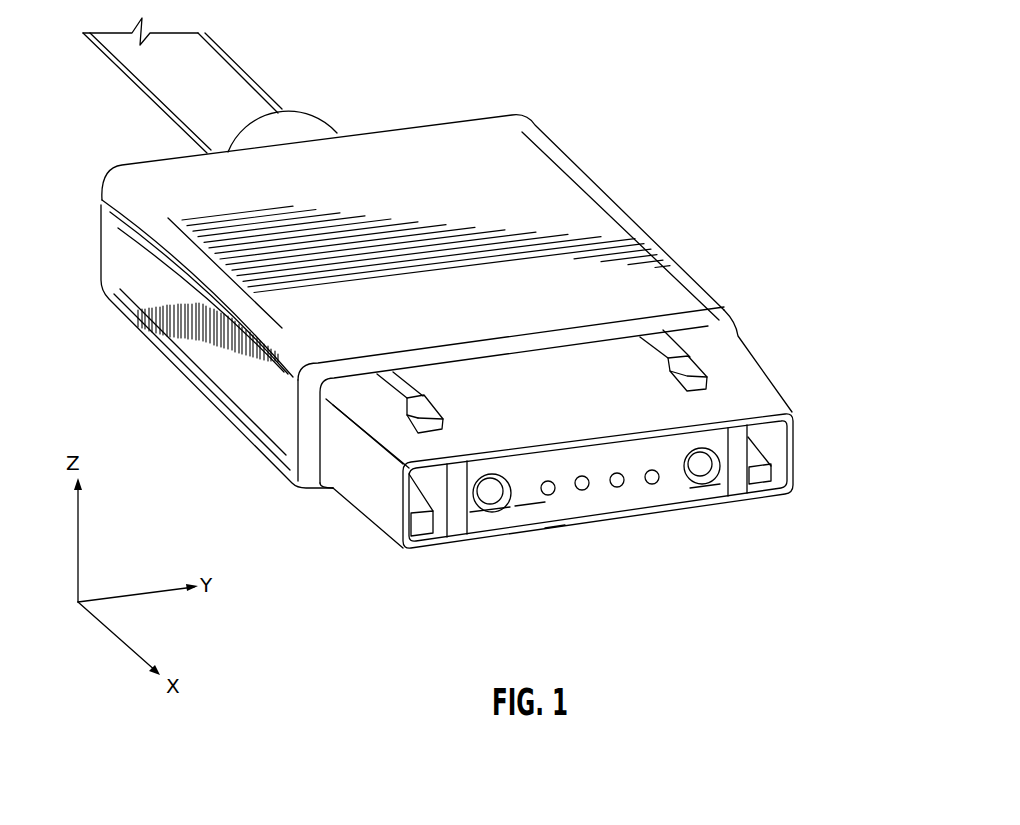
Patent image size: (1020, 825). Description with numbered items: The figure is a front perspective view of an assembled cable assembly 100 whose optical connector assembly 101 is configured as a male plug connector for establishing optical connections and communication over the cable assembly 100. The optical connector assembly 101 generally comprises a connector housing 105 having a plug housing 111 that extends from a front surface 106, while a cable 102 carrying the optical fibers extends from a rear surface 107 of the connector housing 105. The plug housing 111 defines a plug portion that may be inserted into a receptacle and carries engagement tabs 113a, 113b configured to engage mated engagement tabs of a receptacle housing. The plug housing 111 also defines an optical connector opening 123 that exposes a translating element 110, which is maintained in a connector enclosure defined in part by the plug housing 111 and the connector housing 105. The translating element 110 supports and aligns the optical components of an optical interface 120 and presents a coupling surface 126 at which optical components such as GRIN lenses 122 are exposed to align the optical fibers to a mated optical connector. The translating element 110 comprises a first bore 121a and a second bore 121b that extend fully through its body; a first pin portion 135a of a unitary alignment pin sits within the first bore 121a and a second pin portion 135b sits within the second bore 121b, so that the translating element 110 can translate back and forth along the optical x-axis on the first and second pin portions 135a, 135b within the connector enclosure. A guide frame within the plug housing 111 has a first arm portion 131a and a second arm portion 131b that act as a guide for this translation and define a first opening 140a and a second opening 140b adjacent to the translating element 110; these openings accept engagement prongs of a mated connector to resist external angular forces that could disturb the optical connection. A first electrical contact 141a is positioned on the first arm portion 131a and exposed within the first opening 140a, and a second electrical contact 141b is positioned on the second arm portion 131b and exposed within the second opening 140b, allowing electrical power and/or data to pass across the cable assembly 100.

The cable assembly 100 is at (613, 137).
The optical connector assembly 101 is at (607, 188).
The cable 102 is at (192, 108).
The connector housing 105 is at (190, 350).
The front surface 106 is at (727, 323).
The rear surface 107 is at (400, 127).
The translating element 110 is at (670, 438).
The plug housing 111 is at (385, 485).
The engagement tab 113a is at (690, 353).
The engagement tab 113b is at (427, 390).
The optical interface 120 is at (582, 455).
The first bore 121a is at (703, 488).
The second bore 121b is at (487, 513).
The GRIN lenses 122 is at (652, 484).
The optical connector opening 123 is at (553, 527).
The coupling surface 126 is at (527, 512).
The first arm portion 131a is at (740, 484).
The second arm portion 131b is at (452, 535).
The first pin portion 135a is at (702, 464).
The second pin portion 135b is at (492, 488).
The first opening 140a is at (777, 437).
The second opening 140b is at (427, 483).
The first electrical contact 141a is at (795, 482).
The second electrical contact 141b is at (417, 522).